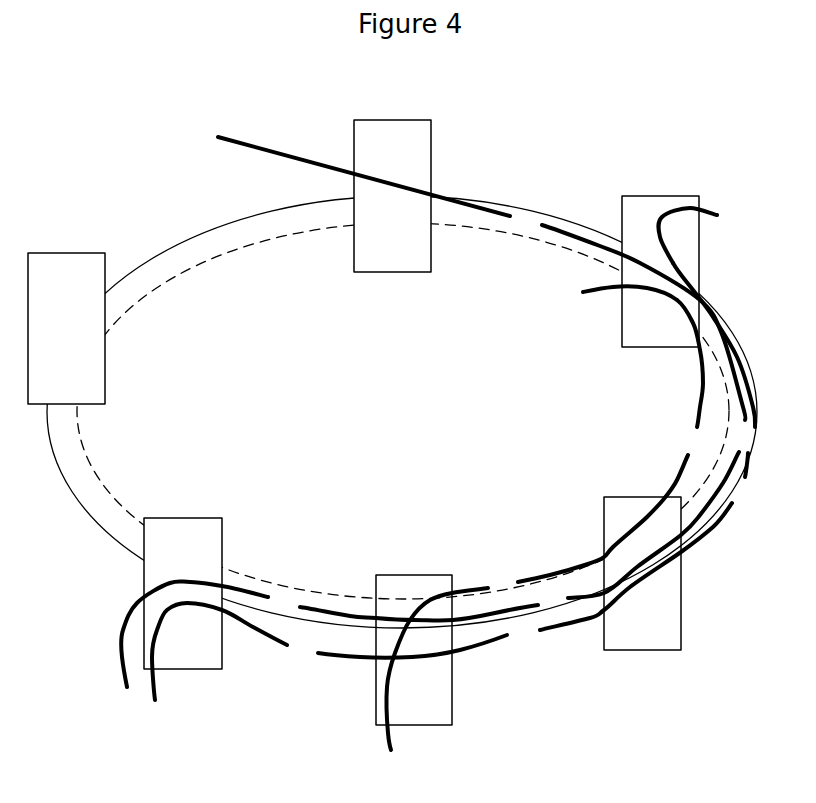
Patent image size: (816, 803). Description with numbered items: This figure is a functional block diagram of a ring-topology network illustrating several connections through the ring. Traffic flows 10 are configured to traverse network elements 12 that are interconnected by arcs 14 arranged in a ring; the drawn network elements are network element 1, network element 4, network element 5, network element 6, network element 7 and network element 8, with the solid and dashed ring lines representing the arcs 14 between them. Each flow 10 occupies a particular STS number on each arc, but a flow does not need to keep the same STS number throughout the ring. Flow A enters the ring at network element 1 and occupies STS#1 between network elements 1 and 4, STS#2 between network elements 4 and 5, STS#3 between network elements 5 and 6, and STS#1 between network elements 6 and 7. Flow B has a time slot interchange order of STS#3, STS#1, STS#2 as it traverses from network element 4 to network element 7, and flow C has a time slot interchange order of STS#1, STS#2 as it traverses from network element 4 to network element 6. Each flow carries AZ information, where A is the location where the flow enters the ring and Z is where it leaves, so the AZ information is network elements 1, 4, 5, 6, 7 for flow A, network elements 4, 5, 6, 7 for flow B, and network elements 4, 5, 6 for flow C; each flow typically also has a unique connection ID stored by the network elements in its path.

The network element 1 is at (410, 437).
The STS# 2 is at (447, 589).
The STS# 3 is at (646, 541).
The network element 4 is at (660, 271).
The network element 5 is at (402, 423).
The network element 6 is at (414, 650).
The network element 7 is at (183, 593).
The network element 8 is at (66, 328).
The traffic flow 10 is at (720, 323).
The network element 12 is at (424, 117).
The arc 14 is at (527, 206).
The flow A is at (245, 142).
The flow B is at (711, 203).
The flow C is at (601, 297).